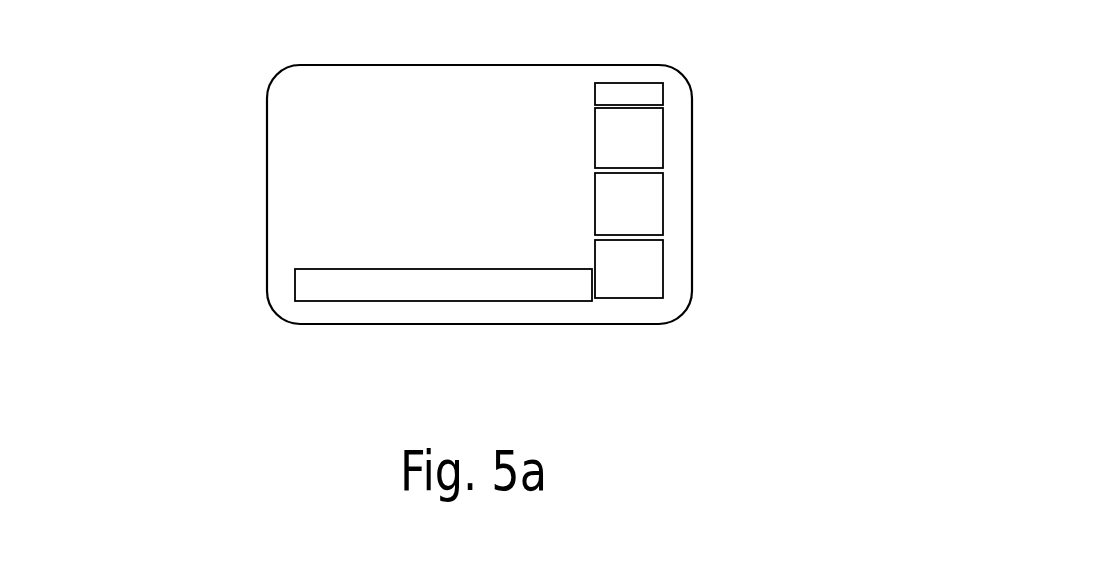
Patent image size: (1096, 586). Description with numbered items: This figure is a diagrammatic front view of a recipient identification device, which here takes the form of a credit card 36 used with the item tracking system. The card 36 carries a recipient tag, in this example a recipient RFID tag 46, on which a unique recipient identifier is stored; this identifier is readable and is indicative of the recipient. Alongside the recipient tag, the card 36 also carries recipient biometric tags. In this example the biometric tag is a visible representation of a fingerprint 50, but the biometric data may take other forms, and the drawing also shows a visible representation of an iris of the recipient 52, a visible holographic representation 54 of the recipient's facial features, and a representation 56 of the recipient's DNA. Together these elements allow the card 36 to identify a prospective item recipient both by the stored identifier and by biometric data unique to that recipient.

The credit card 36 is at (156, 157).
The recipient RFID tag 46 is at (627, 83).
The visible representation of a fingerprint 50 is at (663, 135).
The visible representation of an iris of the recipient 52 is at (663, 203).
The visible holographic representation of facial features of the recipient 54 is at (663, 267).
The representation of DNA of the recipient 56 is at (428, 323).